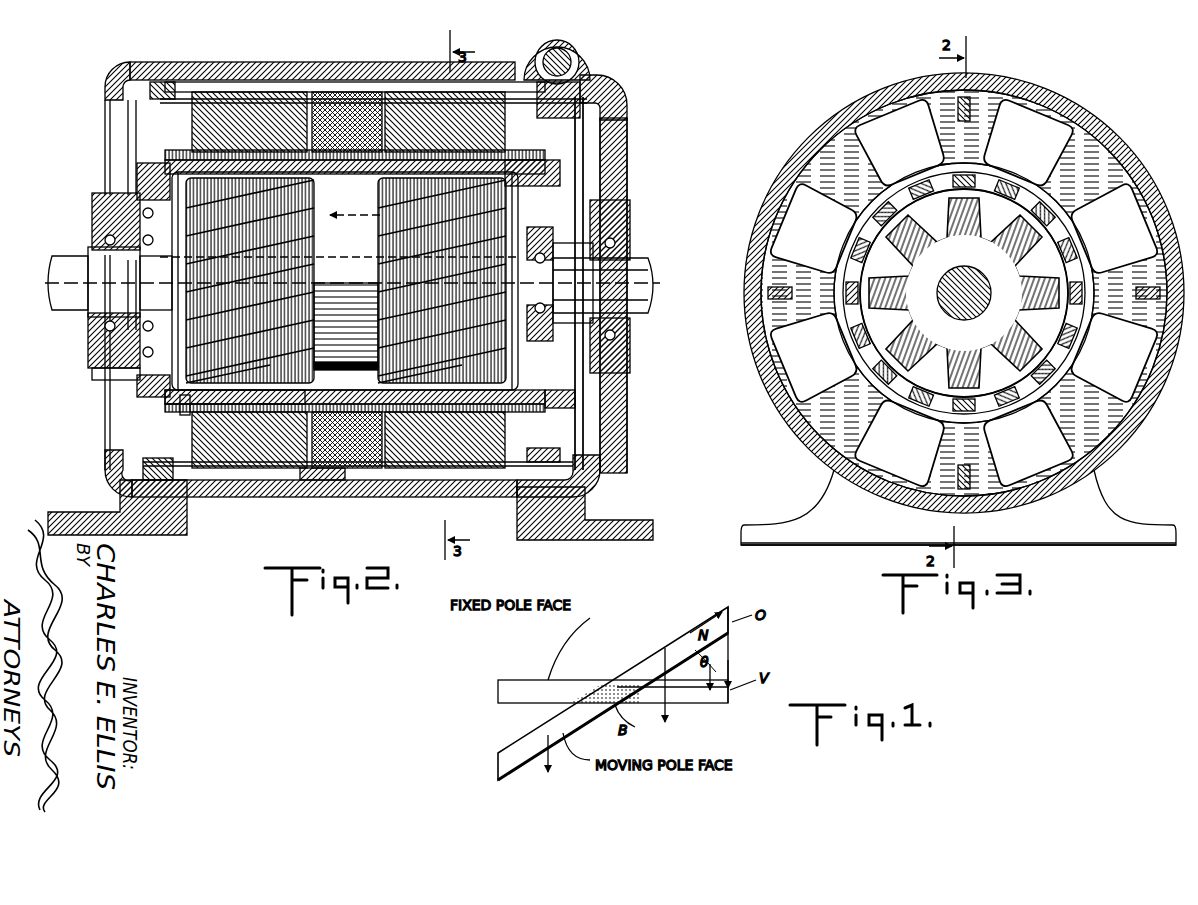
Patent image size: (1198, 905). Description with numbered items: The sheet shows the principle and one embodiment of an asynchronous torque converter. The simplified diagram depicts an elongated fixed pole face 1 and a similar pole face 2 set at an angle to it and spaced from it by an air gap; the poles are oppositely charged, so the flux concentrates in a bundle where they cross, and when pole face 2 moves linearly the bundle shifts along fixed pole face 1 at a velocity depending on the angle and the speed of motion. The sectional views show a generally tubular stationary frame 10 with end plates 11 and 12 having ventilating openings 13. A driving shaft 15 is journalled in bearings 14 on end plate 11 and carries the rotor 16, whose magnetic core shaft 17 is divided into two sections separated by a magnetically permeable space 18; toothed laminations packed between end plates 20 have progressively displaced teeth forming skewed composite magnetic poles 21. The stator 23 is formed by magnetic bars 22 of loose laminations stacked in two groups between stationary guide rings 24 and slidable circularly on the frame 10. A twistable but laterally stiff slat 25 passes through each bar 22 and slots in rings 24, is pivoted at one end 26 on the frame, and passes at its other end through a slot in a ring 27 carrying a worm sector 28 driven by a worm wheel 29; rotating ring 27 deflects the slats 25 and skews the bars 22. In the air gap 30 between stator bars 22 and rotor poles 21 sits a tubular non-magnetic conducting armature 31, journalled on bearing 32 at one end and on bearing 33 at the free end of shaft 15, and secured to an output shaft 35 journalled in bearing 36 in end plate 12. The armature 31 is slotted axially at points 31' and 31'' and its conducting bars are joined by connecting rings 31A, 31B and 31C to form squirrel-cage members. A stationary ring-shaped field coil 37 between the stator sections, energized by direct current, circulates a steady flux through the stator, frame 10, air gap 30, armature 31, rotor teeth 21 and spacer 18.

In FIG. 2, the stationary frame 10 is at (228, 64).
In FIG. 3, the stationary frame 10 is at (964, 288).
In FIG. 2, the end plate 11 is at (106, 110).
In FIG. 2, the end plate 12 is at (628, 112).
In FIG. 2, the ventilating openings 13 is at (112, 140).
In FIG. 2, the bearings 14 is at (97, 347).
In FIG. 2, the driving shaft 15 is at (92, 258).
In FIG. 3, the driving shaft 15 is at (986, 293).
In FIG. 2, the rotor 16 is at (133, 377).
In FIG. 2, the shaft 17 is at (185, 402).
In FIG. 2, the magnetically permeable space 18 is at (365, 372).
In FIG. 2, the end plates 20 is at (190, 172).
In FIG. 3, the end plates 20 is at (986, 293).
In FIG. 2, the composite magnetic poles 21 is at (395, 273).
In FIG. 3, the composite magnetic poles 21 is at (913, 295).
In FIG. 2, the magnetic bars 22 is at (468, 75).
In FIG. 3, the magnetic bars 22 is at (964, 293).
In FIG. 2, the stator 23 is at (430, 75).
In FIG. 2, the guide rings 24 is at (185, 125).
In FIG. 3, the guide rings 24 is at (964, 293).
In FIG. 2, the slat 25 is at (345, 105).
In FIG. 3, the slat 25 is at (926, 296).
In FIG. 2, the pivot 26 is at (165, 80).
In FIG. 2, the ring 27 is at (575, 115).
In FIG. 2, the worm sector 28 is at (597, 72).
In FIG. 2, the worm wheel 29 is at (575, 55).
In FIG. 2, the air gap 30 is at (505, 165).
In FIG. 2, the tubular armature 31 is at (412, 169).
In FIG. 3, the tubular armature 31 is at (978, 293).
In FIG. 2, the slots 31' is at (355, 386).
In FIG. 3, the slots 31' is at (964, 314).
In FIG. 2, the pole shoe 31'' is at (255, 388).
In FIG. 2, the connecting ring 31A is at (325, 492).
In FIG. 2, the connecting ring 31B is at (137, 397).
In FIG. 2, the connecting ring 31C is at (580, 397).
In FIG. 2, the bearing 32 is at (140, 205).
In FIG. 2, the bearing 33 is at (532, 235).
In FIG. 2, the driven shaft 35 is at (645, 310).
In FIG. 2, the bearing 36 is at (628, 240).
In FIG. 2, the field coil 37 is at (320, 93).
In FIG. 1, the fixed pole face 1 is at (508, 682).
In FIG. 1, the movable pole face 2 is at (518, 748).